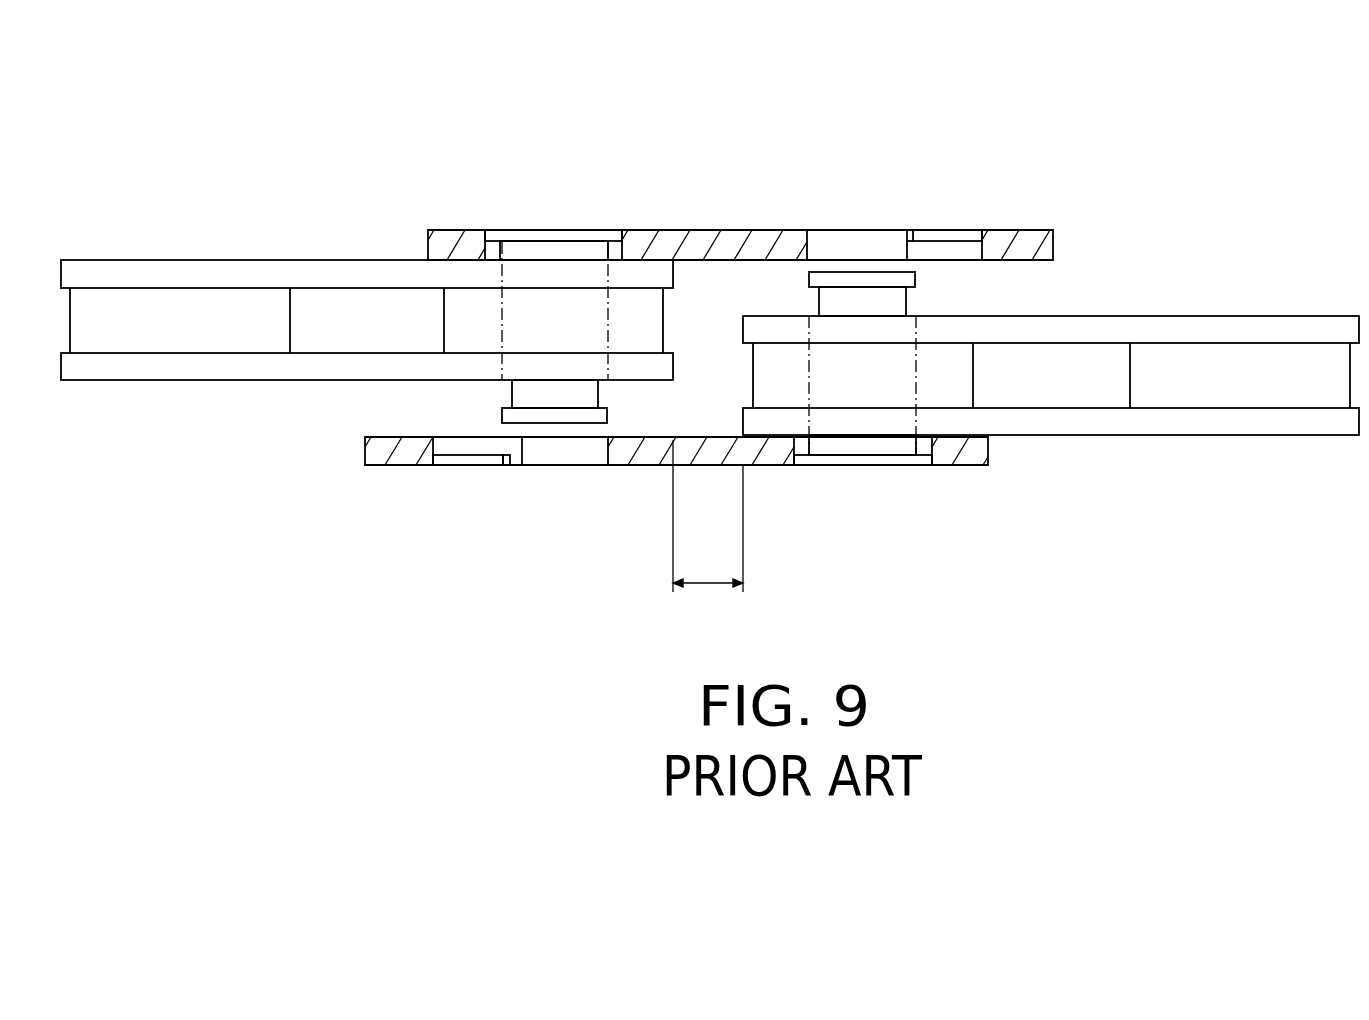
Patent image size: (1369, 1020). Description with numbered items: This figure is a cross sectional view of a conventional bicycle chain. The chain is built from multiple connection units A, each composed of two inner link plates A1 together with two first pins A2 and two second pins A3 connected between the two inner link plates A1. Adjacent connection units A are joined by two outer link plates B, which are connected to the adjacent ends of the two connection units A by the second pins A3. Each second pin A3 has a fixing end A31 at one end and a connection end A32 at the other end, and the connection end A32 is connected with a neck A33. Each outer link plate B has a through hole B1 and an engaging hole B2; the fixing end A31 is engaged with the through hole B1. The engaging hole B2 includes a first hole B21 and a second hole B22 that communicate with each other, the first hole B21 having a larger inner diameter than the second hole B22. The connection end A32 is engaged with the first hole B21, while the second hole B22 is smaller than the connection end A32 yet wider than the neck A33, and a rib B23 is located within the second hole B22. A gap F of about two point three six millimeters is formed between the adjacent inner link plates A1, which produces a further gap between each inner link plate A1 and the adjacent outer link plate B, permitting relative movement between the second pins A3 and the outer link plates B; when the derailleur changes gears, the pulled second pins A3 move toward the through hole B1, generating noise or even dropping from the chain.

The connection unit A is at (450, 133).
The inner link plate A1 is at (269, 275).
The first pin A2 is at (458, 320).
The second pin A3 is at (689, 365).
The fixing end A31 is at (558, 237).
The connection end A32 is at (508, 417).
The neck A33 is at (520, 397).
The outer link plate B is at (725, 238).
The through hole B1 is at (632, 237).
The engaging hole B2 is at (855, 238).
The first hole B21 is at (823, 240).
The second hole B22 is at (973, 240).
The rib B23 is at (957, 240).
The gap F is at (708, 516).